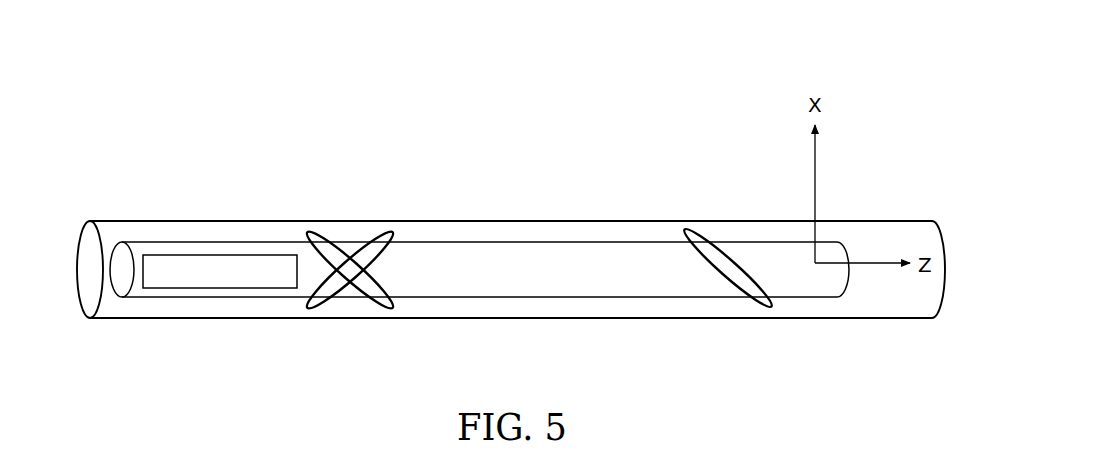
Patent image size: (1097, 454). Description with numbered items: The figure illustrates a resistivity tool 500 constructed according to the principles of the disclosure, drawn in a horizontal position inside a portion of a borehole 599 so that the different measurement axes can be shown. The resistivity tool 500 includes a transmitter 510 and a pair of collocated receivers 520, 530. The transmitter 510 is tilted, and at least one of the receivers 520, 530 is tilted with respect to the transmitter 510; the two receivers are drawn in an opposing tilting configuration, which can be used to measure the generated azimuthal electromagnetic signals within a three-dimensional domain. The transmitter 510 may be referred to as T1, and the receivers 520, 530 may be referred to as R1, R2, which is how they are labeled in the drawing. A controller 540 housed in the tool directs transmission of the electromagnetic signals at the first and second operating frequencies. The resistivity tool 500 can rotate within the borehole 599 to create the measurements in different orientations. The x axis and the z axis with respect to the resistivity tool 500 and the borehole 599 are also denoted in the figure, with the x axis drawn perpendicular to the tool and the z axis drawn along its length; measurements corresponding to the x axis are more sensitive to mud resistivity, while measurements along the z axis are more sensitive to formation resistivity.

The resistivity tool 500 is at (262, 70).
The borehole 599 is at (90, 221).
The controller 540 is at (222, 259).
The receiver 520 is at (346, 288).
The receiver 530 is at (339, 288).
The transmitter 510 is at (739, 287).
The receiver designation R1 is at (346, 254).
The receiver designation R2 is at (352, 254).
The transmitter designation T1 is at (725, 252).